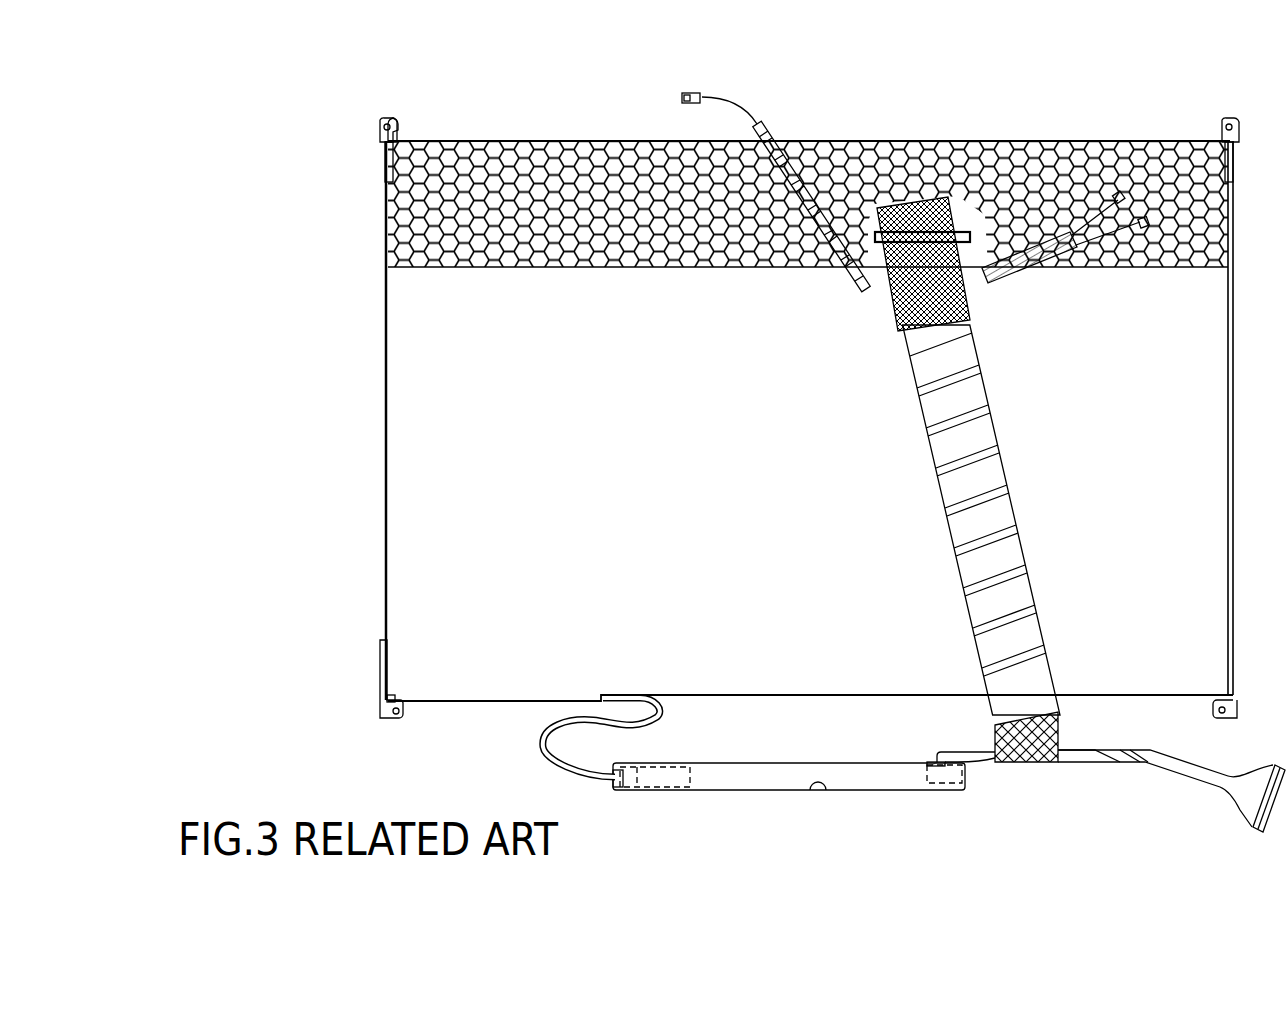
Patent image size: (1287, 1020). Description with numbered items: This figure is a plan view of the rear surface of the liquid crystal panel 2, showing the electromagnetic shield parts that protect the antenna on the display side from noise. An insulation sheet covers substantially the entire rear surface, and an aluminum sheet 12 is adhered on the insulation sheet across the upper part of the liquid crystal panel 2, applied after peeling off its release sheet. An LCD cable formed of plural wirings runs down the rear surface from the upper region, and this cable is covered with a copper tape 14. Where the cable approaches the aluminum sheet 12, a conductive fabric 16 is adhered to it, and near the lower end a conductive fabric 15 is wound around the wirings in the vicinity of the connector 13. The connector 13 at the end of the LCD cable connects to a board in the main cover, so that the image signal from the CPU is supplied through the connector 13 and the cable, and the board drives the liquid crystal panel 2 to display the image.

The liquid crystal panel 2 is at (378, 44).
The aluminum sheet 12 is at (392, 222).
The connector 13 is at (1242, 800).
The copper tape 14 is at (980, 452).
The conductive fabric 15 is at (1042, 763).
The conductive fabric 16 is at (918, 208).